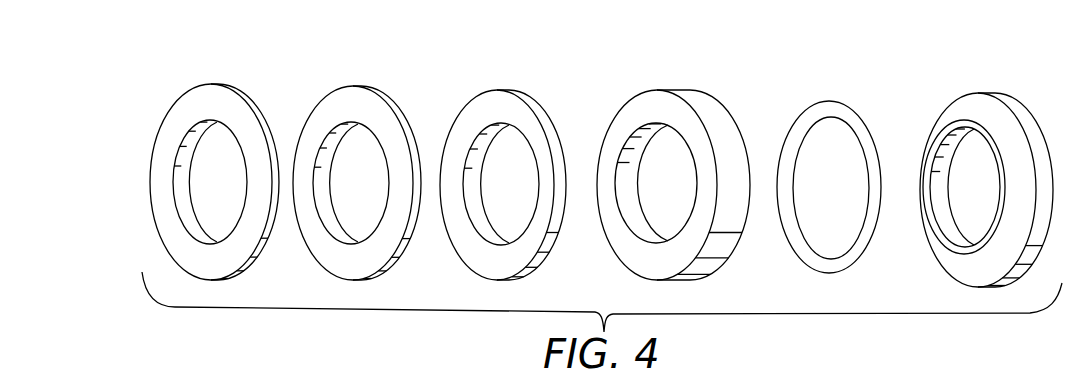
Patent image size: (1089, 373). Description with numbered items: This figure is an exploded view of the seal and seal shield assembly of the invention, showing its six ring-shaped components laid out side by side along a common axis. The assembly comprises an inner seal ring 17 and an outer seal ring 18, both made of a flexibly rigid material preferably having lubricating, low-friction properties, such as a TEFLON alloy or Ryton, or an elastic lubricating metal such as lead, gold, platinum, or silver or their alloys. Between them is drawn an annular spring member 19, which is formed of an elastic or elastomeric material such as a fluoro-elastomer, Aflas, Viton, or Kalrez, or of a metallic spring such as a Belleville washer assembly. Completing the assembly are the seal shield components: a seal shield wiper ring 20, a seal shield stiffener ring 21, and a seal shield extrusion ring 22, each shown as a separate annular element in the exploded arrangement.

The inner seal ring 17 is at (978, 102).
The outer seal ring 18 is at (666, 100).
The annular spring member 19 is at (828, 107).
The seal shield wiper ring 20 is at (498, 98).
The seal shield stiffener ring 21 is at (355, 93).
The seal shield extrusion ring 22 is at (209, 93).